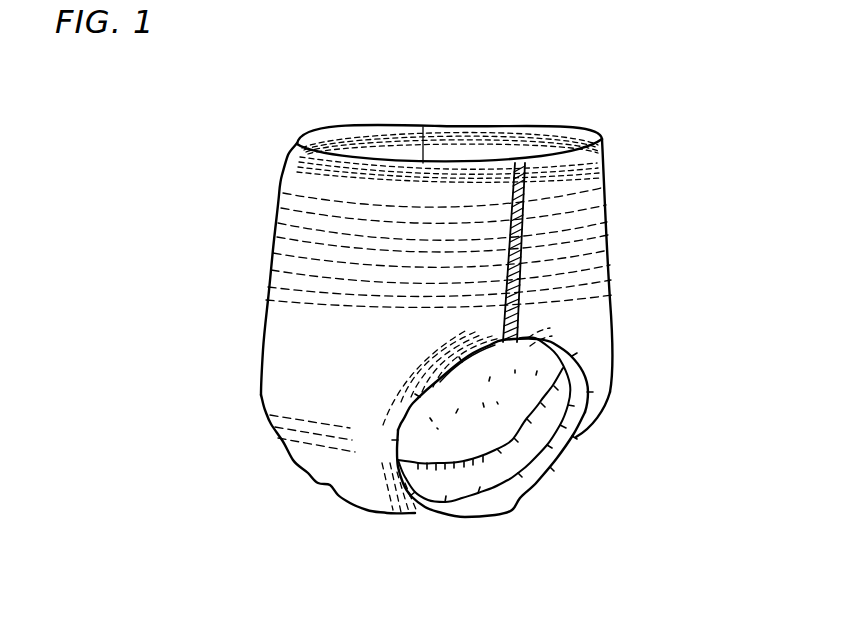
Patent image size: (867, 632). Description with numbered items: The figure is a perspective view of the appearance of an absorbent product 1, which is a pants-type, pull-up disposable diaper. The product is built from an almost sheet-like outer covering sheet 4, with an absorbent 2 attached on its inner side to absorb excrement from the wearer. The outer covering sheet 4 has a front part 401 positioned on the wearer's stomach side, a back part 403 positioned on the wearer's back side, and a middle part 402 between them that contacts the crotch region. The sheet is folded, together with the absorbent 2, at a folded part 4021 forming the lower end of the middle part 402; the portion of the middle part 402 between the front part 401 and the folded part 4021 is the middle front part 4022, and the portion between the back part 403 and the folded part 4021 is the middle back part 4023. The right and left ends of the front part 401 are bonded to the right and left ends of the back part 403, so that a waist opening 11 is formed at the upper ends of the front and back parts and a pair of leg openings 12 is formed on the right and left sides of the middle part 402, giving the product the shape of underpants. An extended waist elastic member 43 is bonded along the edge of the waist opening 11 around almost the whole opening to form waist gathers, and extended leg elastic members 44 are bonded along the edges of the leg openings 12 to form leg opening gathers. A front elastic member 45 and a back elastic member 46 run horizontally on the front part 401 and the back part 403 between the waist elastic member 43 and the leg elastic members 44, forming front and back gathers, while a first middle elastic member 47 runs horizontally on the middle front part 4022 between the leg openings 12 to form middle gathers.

The absorbent product 1 is at (242, 91).
The absorbent 2 is at (503, 423).
The outer covering sheet 4 is at (293, 360).
The waist opening 11 is at (459, 156).
The leg openings 12 is at (455, 428).
The waist elastic member 43 is at (552, 139).
The leg elastic members 44 is at (381, 478).
The front elastic member 45 is at (346, 246).
The back elastic member 46 is at (551, 221).
The first middle elastic member 47 is at (307, 433).
The front part 401 is at (274, 210).
The middle part 402 is at (123, 453).
The back part 403 is at (613, 222).
The folded part 4021 is at (453, 525).
The middle front part 4022 is at (261, 420).
The middle back part 4023 is at (600, 418).